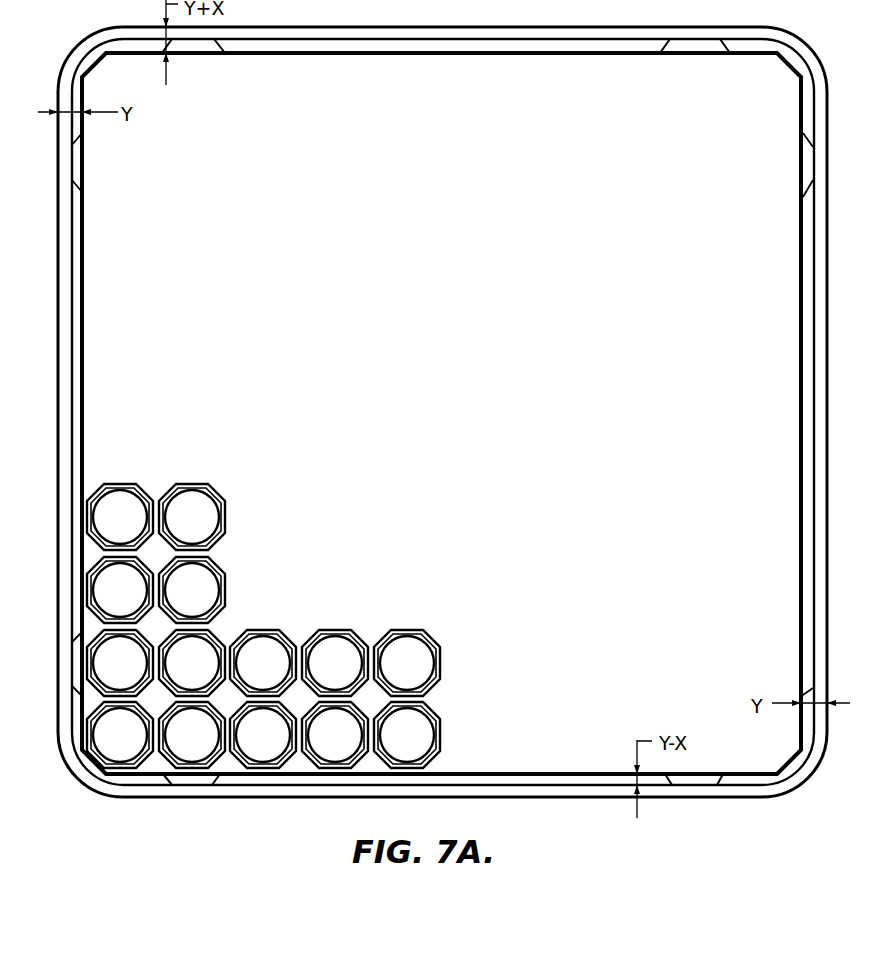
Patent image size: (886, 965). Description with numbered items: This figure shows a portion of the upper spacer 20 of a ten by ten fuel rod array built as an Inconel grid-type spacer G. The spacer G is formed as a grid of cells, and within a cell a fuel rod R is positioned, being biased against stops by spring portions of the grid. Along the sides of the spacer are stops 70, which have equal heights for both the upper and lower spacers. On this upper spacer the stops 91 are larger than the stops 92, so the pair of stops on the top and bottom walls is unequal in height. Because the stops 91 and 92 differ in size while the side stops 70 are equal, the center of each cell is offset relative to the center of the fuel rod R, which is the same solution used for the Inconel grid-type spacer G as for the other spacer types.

The container body 20 is at (828, 375).
The stops on sides 70 is at (84, 168).
The upper spacer stops 91 is at (193, 55).
The stops 92 is at (196, 779).
The Inconel grid-type spacer G is at (428, 629).
The rod R is at (425, 663).